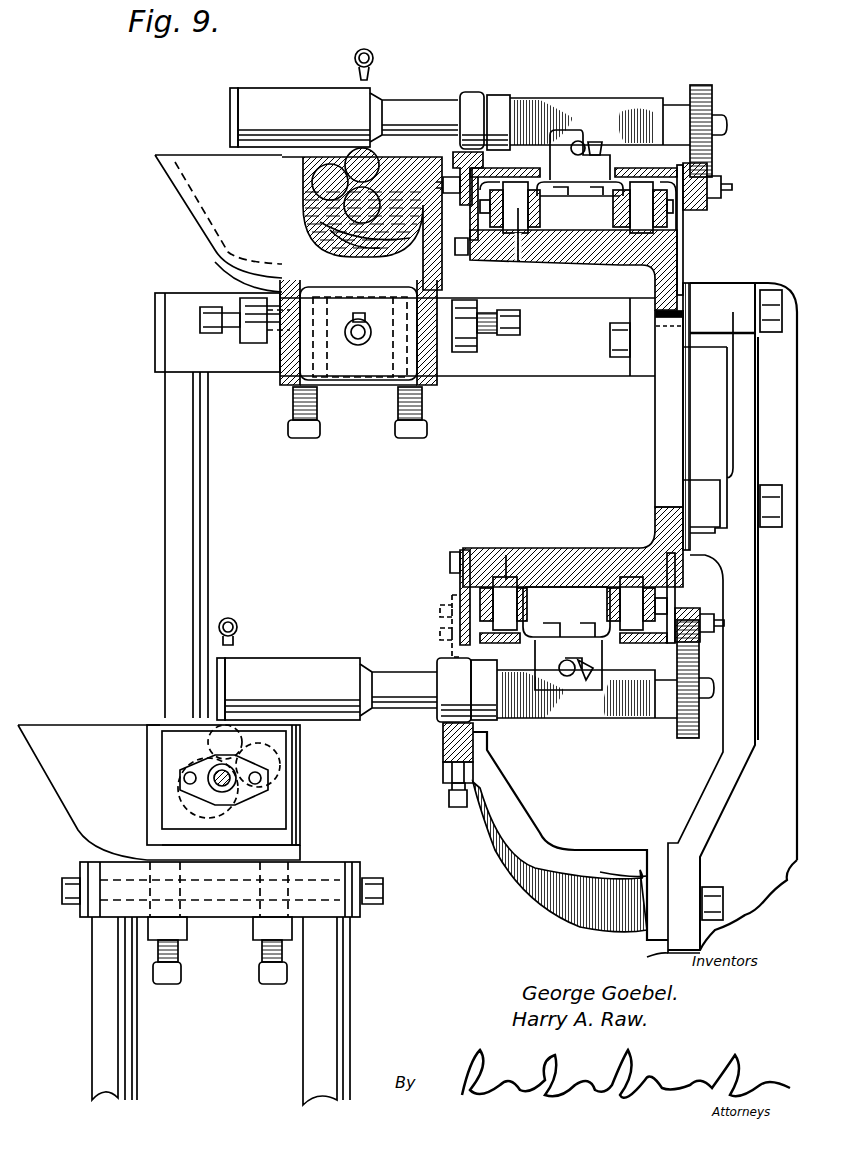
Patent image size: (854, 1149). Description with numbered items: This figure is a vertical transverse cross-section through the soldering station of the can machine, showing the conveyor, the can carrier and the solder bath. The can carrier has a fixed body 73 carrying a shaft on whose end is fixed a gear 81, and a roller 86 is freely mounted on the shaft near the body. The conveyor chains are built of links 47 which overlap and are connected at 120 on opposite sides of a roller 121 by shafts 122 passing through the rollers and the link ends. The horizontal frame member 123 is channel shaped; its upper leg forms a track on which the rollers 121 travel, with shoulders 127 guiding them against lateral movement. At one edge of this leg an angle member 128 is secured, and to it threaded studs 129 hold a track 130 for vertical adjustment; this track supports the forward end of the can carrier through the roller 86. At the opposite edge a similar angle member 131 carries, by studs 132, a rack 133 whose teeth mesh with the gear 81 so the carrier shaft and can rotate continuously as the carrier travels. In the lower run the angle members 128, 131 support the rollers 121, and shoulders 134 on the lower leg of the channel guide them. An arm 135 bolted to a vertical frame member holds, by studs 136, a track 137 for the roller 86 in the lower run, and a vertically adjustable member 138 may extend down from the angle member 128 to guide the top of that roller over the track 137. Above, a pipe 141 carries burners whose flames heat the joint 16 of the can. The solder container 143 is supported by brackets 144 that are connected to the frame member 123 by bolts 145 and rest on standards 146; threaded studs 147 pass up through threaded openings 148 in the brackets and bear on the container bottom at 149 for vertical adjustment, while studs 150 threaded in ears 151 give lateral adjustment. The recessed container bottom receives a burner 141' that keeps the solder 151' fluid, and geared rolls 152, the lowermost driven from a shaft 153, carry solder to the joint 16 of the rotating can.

The joint 16 is at (356, 95).
The links 47 is at (573, 409).
The fixed body 73 is at (645, 105).
The gear 81 is at (713, 108).
The roller 86 is at (474, 95).
The overlapped connection 120 is at (532, 212).
The roller 121 is at (518, 262).
The shafts 122 is at (498, 178).
The horizontal frame member 123 is at (548, 565).
The shoulders 127 is at (610, 266).
The angle member 128 is at (468, 256).
The threaded studs 129 is at (442, 185).
The track 130 is at (455, 160).
The angle member 131 is at (684, 222).
The studs 132 is at (728, 189).
The rack 133 is at (708, 175).
The shoulders 134 is at (630, 548).
The arm 135 is at (540, 835).
The studs 136 is at (456, 809).
The track 137 is at (443, 747).
The vertically adjustable member 138 is at (452, 602).
The pipe 141 is at (314, 333).
The burner 141' is at (358, 333).
The container 143 is at (290, 208).
The brackets 144 is at (367, 605).
The bolts 145 is at (615, 357).
The standards 146 is at (175, 422).
The threaded studs 147 is at (395, 406).
The threaded openings 148 is at (278, 378).
The container bottom engagement 149 is at (278, 283).
The studs 150 is at (225, 332).
The ears 151 is at (346, 347).
The solder 151' is at (319, 228).
The rolls 152 is at (312, 180).
The shaft 153 is at (345, 222).